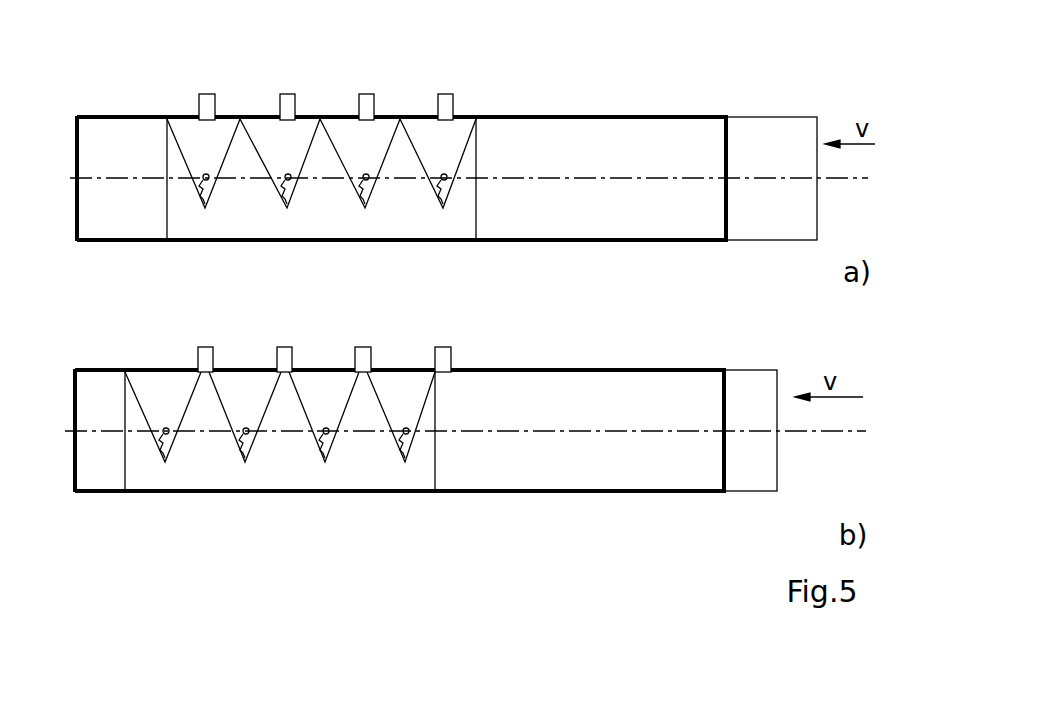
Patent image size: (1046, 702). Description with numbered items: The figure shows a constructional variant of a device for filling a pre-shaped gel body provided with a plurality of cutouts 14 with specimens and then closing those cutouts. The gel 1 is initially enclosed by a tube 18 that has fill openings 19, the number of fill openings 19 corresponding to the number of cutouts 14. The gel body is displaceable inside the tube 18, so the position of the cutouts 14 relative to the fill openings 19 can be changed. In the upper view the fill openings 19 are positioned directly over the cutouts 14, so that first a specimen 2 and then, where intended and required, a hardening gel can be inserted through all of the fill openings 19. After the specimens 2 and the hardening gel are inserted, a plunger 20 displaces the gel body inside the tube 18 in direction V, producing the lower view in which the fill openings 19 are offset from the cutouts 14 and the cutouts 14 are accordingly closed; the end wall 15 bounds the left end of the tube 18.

The gel 1 is at (321, 130).
The specimen 2 is at (364, 176).
The cutout 14 is at (185, 128).
The inlet end wall 15 is at (65, 177).
The tube 18 is at (557, 117).
The fill opening 19 is at (206, 94).
The plunger 20 is at (756, 132).